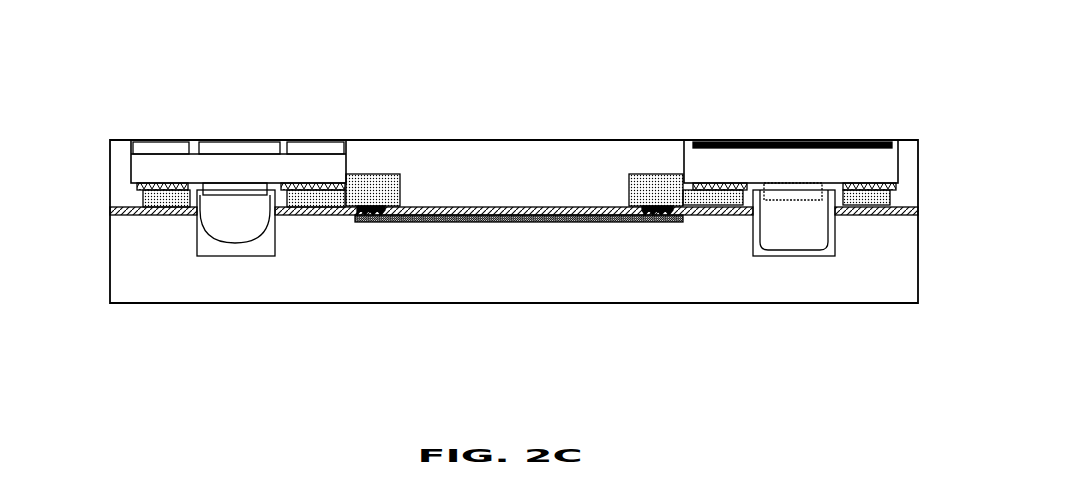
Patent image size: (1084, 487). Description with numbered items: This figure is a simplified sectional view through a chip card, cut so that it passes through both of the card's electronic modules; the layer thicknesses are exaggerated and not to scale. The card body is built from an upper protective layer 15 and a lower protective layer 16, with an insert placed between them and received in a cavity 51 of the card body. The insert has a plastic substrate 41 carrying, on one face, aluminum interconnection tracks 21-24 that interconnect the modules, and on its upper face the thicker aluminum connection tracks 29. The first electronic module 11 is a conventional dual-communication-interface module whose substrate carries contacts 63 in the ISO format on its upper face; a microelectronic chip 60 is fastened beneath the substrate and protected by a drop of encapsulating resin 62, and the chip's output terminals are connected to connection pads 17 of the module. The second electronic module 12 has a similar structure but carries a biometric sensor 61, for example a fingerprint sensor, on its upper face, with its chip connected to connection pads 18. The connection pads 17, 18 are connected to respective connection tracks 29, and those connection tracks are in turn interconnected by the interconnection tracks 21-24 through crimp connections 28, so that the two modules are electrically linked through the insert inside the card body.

The first electronic module 11 is at (295, 127).
The second electronic module 12 is at (820, 128).
The upper protective layer 15 is at (123, 167).
The lower protective layer 16 is at (123, 283).
The connection pads 17 is at (158, 185).
The connection pads 18 is at (743, 190).
The interconnection tracks 21-24 is at (487, 222).
The crimp connections 28 is at (377, 220).
The connection tracks 29 is at (388, 190).
The plastic substrate 41 is at (118, 210).
The cavity 51 is at (258, 245).
The microelectronic chip 60 is at (222, 190).
The biometric sensor 61 is at (883, 143).
The encapsulating resin 62 is at (233, 228).
The contacts 63 is at (235, 148).